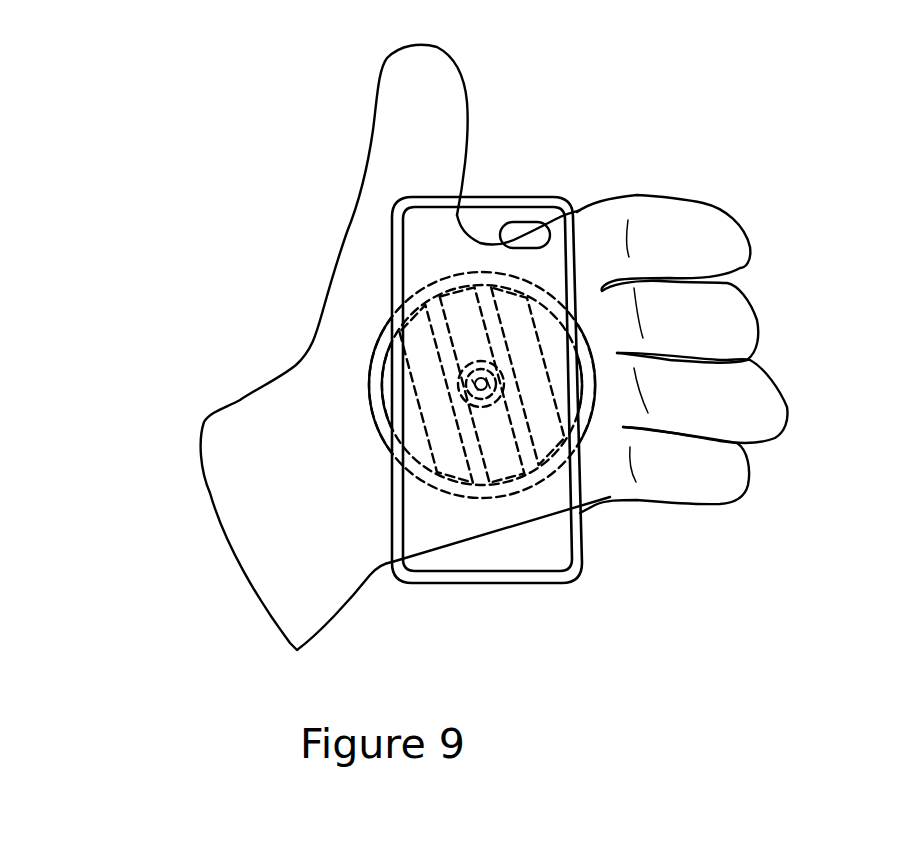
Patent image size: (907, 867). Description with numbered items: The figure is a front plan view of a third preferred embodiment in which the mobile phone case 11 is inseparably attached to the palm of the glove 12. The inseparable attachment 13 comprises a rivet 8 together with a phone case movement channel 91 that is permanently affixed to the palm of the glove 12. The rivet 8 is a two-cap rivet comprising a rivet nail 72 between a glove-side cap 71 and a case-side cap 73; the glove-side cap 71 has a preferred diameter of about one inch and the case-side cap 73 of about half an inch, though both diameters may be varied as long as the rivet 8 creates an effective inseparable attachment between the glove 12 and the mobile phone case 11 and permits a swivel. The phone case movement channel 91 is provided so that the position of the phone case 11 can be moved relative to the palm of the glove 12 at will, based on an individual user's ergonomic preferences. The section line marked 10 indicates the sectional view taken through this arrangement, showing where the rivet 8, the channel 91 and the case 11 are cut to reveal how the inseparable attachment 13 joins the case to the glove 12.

The two-cap rivet 8 is at (462, 408).
The inseparable attachment 13 is at (482, 385).
The section line 10- 10 is at (595, 722).
The mobile phone case 11 is at (481, 222).
The glove 12 is at (300, 443).
The glove-side cap 71 is at (487, 367).
The rivet nail 72 is at (493, 388).
The case-side cap 73 is at (468, 366).
The phone case movement channel 91 is at (430, 293).